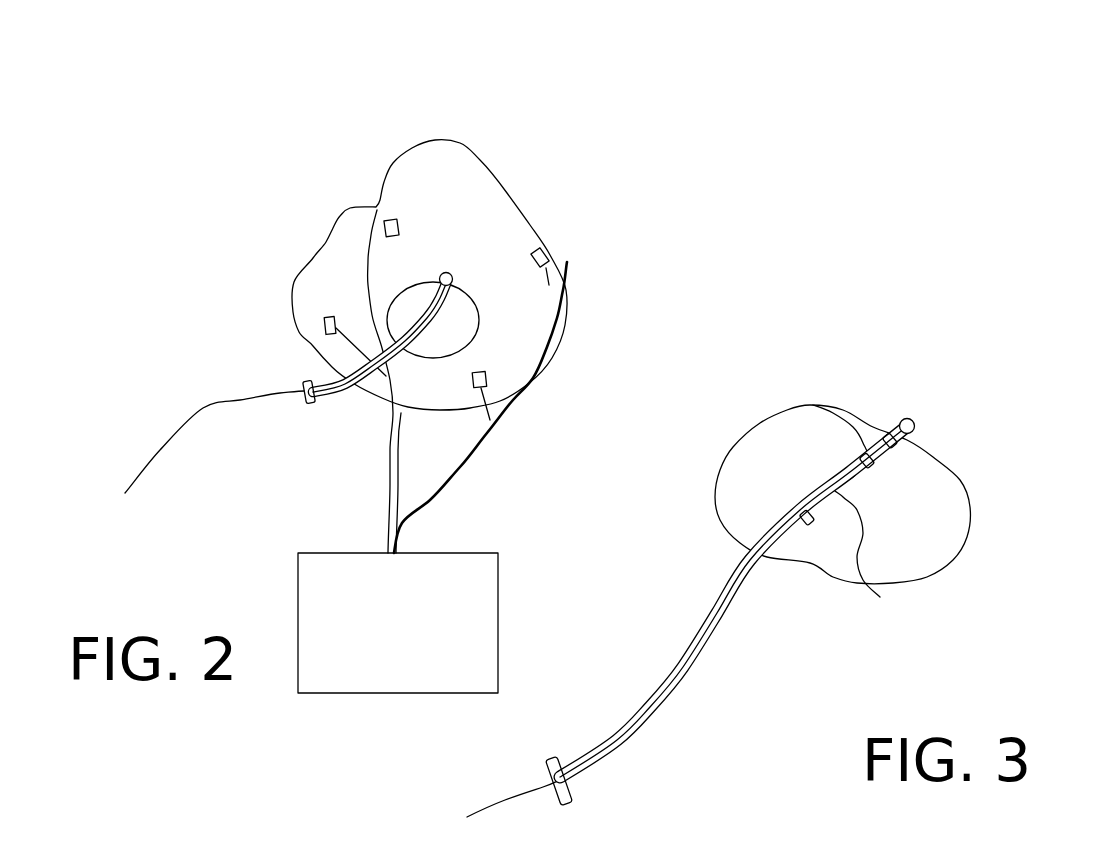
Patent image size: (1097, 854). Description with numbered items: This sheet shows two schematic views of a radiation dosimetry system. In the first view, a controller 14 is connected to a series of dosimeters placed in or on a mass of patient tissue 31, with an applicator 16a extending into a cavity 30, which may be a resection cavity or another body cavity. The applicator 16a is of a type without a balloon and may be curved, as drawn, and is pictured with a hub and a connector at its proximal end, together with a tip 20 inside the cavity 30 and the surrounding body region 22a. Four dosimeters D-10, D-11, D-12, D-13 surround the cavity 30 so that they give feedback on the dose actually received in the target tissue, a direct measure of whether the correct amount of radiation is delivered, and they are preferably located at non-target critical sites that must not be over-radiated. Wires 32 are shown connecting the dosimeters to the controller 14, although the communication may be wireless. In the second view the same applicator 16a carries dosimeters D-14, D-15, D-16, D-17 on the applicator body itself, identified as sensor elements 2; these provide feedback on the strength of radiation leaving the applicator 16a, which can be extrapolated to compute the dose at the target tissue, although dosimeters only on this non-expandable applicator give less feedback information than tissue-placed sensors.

In FIG. 3, the sensor elements on catheter 2 is at (877, 457).
In FIG. 2, the controller 14 is at (490, 655).
In FIG. 2, the applicator 16a is at (366, 392).
In FIG. 3, the applicator 16a is at (720, 627).
In FIG. 2, the catheter tip 20 is at (452, 283).
In FIG. 2, the patient chest wall 22a is at (205, 408).
In FIG. 2, the cavity 30 is at (415, 292).
In FIG. 2, the mass of patient tissue 31 is at (500, 193).
In FIG. 2, the wires 32 is at (505, 415).
In FIG. 2, the dosimeter D-10 is at (383, 229).
In FIG. 2, the dosimeter D-11 is at (543, 250).
In FIG. 2, the dosimeter D-12 is at (492, 376).
In FIG. 2, the dosimeter D-13 is at (325, 325).
In FIG. 3, the dosimeter D-14 is at (889, 430).
In FIG. 3, the dosimeter D-15 is at (870, 447).
In FIG. 3, the dosimeter D-16 is at (810, 523).
In FIG. 3, the dosimeter D-17 is at (810, 520).